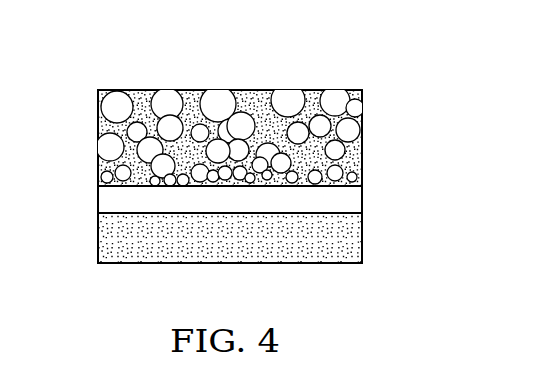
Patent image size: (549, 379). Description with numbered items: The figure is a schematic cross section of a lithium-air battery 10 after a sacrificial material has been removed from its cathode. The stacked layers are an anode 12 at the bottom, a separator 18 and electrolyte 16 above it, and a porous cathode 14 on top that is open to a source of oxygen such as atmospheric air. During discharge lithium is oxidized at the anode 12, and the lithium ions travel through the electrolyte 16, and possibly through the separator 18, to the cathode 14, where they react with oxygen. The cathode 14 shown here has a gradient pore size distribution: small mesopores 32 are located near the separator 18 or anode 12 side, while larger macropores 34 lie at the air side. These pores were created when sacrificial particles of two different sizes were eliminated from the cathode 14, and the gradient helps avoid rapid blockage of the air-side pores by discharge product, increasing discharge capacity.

The lithium-air battery 10 is at (134, 54).
The anode 12 is at (358, 240).
The cathode 14 is at (98, 118).
The electrolyte 16 is at (358, 200).
The separator 18 is at (98, 198).
The mesopores 32 is at (362, 167).
The macropores 34 is at (338, 105).